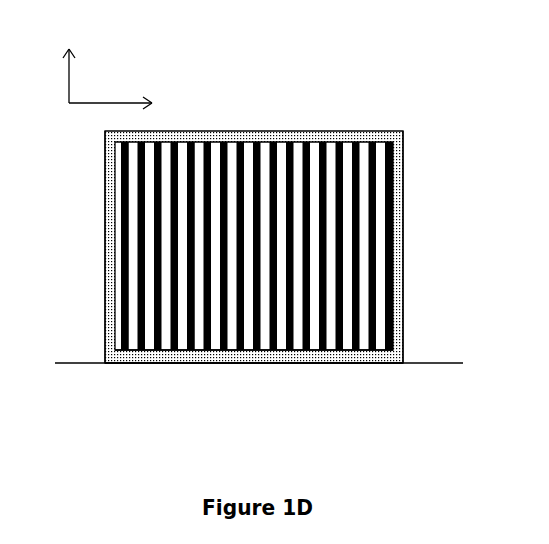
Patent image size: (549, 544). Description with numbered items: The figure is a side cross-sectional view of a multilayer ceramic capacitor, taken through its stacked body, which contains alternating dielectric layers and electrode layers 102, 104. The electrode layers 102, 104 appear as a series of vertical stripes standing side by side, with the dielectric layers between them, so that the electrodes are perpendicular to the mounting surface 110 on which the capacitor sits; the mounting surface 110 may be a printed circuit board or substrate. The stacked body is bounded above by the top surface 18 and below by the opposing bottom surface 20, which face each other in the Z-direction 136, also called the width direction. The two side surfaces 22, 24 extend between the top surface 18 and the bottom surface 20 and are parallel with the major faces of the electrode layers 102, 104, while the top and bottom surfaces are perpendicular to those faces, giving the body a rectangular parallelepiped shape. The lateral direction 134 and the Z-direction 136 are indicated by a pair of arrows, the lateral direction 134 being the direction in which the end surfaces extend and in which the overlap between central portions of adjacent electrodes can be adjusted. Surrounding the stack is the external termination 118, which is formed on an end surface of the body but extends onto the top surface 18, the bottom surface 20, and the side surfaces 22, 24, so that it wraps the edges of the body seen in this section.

The top surface 18 is at (240, 143).
The bottom surface 20 is at (281, 352).
The side surface 22 is at (115, 245).
The side surface 24 is at (396, 245).
The electrode layer 102 is at (139, 353).
The electrode layer 104 is at (187, 353).
The mounting surface 110 is at (437, 362).
The external termination 118 is at (343, 355).
The lateral direction 134 is at (129, 107).
The Z-direction 136 is at (63, 65).